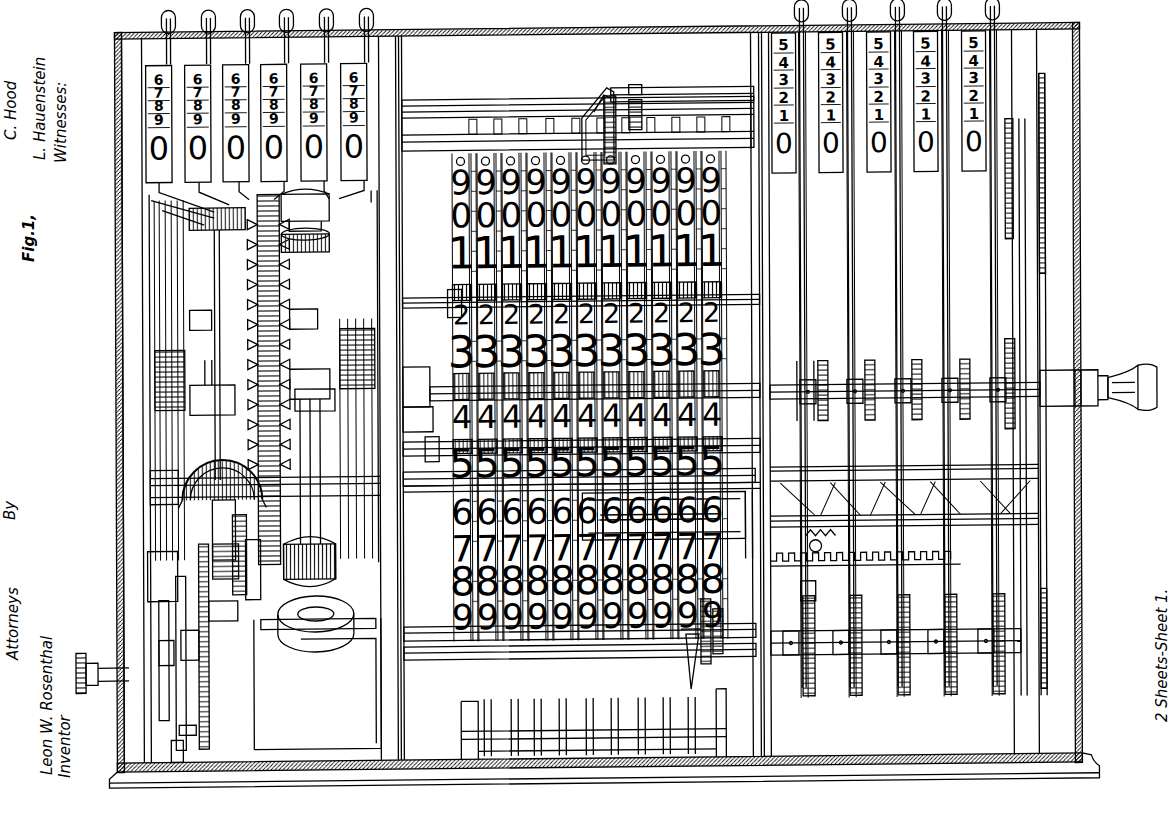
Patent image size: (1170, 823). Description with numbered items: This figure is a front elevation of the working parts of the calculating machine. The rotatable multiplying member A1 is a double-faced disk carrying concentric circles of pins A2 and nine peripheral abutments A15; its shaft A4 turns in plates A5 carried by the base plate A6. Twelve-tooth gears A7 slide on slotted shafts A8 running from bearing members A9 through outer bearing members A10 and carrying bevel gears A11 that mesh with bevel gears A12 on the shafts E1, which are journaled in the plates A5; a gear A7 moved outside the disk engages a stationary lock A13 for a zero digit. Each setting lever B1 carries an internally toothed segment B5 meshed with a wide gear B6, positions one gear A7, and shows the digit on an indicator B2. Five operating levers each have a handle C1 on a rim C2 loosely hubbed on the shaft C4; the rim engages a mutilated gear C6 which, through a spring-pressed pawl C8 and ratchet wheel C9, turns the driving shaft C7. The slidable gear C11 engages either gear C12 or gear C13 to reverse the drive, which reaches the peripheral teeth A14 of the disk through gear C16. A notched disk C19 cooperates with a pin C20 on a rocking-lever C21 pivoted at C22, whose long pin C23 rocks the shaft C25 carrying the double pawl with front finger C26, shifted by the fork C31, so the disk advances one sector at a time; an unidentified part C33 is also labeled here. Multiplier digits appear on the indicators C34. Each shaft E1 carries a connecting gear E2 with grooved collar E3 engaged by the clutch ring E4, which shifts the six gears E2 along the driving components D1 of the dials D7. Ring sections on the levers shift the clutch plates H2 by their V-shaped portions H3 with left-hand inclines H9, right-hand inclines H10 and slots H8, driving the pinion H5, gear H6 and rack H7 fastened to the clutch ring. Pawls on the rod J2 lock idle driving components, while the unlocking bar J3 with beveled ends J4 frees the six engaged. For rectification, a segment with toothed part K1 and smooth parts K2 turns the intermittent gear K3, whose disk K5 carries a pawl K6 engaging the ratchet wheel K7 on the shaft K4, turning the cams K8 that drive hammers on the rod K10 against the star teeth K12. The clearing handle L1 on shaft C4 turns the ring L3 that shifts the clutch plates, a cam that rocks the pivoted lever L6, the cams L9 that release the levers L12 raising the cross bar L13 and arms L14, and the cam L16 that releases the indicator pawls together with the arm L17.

The setting lever B1 is at (375, 16).
The indicator B2 is at (150, 93).
The internally toothed segment B5 is at (155, 378).
The wide gear B6 is at (195, 348).
The multiplying member A1 is at (258, 379).
The pins A2 is at (283, 287).
The shaft A4 is at (300, 376).
The plates A5 is at (1052, 738).
The base plate A6 is at (125, 778).
The twelve-tooth gears A7 is at (218, 441).
The slotted shafts A8 is at (312, 511).
The bearing members A9 is at (205, 374).
The outer bearing members A10 is at (340, 604).
The bevel gears A11 is at (283, 614).
The bevel gears A12 is at (345, 621).
The stationary lock A13 is at (187, 221).
The peripheral teeth A14 is at (268, 279).
The abutments A15 is at (235, 295).
The handle C1 is at (857, 14).
The rim C2 is at (903, 463).
The shaft C4 is at (1092, 373).
The mutilated gear C6 is at (880, 711).
The driving shaft C7 is at (828, 683).
The spring pressed pawl C8 is at (898, 603).
The ratchet wheel C9 is at (896, 673).
The gear C11 is at (210, 696).
The gear C12 is at (226, 572).
The gear C13 is at (258, 574).
The gear C16 is at (258, 596).
The notched disk C19 is at (165, 696).
The pin C20 is at (195, 726).
The rocking-lever C21 is at (160, 686).
The pivot C22 is at (168, 744).
The long pin C23 is at (163, 609).
The shaft C25 is at (178, 586).
The front finger C26 is at (90, 650).
The fork C31 is at (194, 695).
The block C33 is at (160, 644).
The multiplier indicator C34 is at (782, 40).
The driving component D1 is at (500, 125).
The dial D7 is at (455, 238).
The shaft E1 is at (425, 635).
The connecting gear E2 is at (712, 660).
The grooved collar E3 is at (598, 124).
The clutch ring E4 is at (686, 685).
The clutch plate H2 is at (945, 523).
The V-shaped raised portion H3 is at (968, 518).
The pinion H5 is at (822, 543).
The gear H6 is at (840, 561).
The rack H7 is at (817, 598).
The slots H8 is at (880, 498).
The left hand inclines H9 is at (831, 495).
The right hand inclines H10 is at (933, 492).
The rod J2 is at (412, 455).
The unlocking bar J3 is at (743, 524).
The beveled ends J4 is at (663, 515).
The toothed part K1 is at (860, 343).
The smooth peripheral parts K2 is at (860, 231).
The intermittent gears K3 is at (815, 423).
The shaft K4 is at (785, 391).
The disk K5 is at (870, 423).
The spring-pressed pawl K6 is at (917, 368).
The ratchet wheel K7 is at (917, 423).
The cams K8 is at (470, 385).
The rod K10 is at (433, 302).
The star teeth K12 is at (458, 194).
The clearing handle L1 is at (1130, 408).
The ring L3 is at (1040, 83).
The pivoted lever L6 is at (438, 490).
The cams L9 is at (430, 380).
The levers L12 is at (735, 698).
The cross bar L13 is at (470, 730).
The arms L14 is at (612, 700).
The cam L16 is at (1012, 343).
The arm L17 is at (1012, 256).